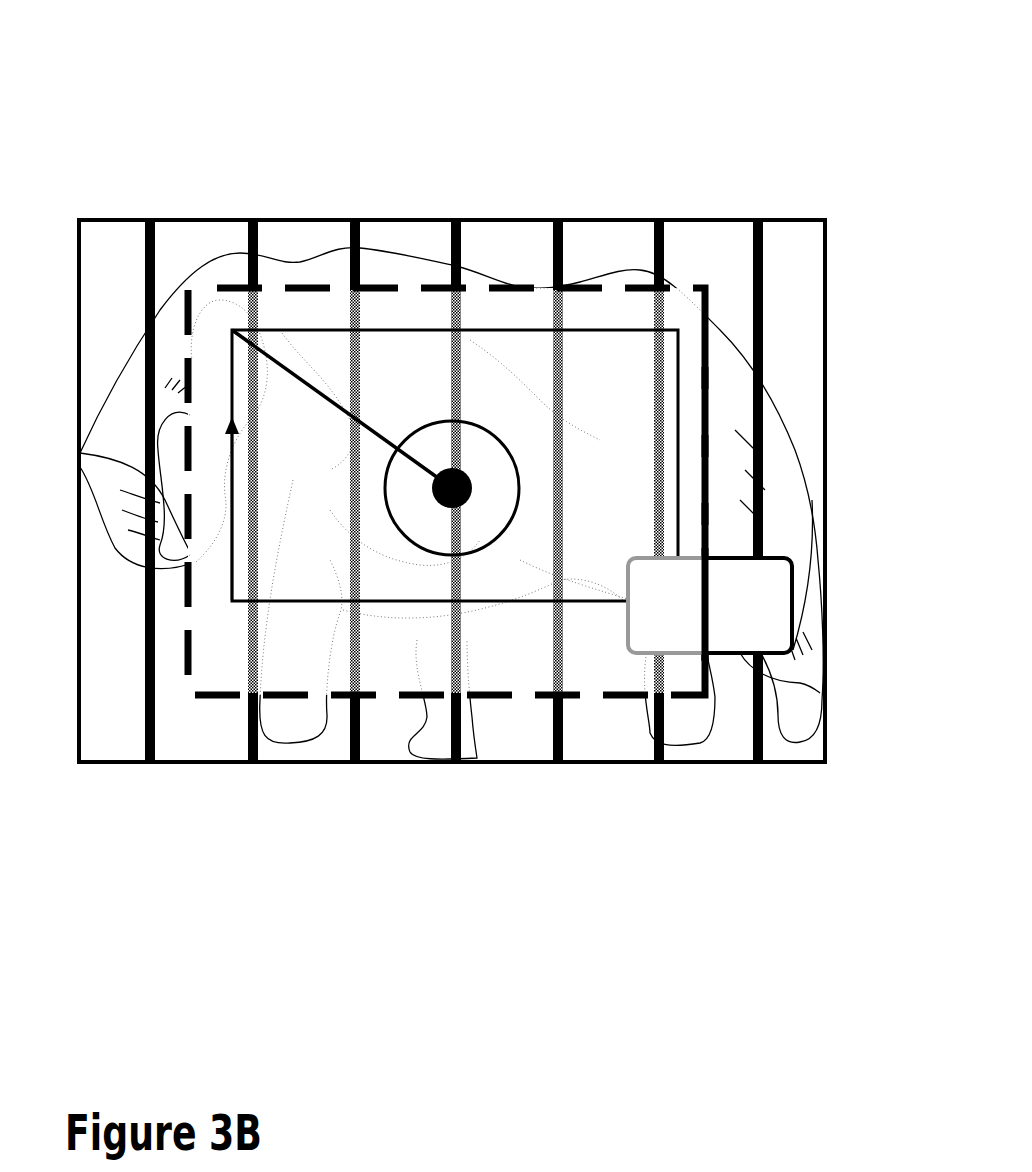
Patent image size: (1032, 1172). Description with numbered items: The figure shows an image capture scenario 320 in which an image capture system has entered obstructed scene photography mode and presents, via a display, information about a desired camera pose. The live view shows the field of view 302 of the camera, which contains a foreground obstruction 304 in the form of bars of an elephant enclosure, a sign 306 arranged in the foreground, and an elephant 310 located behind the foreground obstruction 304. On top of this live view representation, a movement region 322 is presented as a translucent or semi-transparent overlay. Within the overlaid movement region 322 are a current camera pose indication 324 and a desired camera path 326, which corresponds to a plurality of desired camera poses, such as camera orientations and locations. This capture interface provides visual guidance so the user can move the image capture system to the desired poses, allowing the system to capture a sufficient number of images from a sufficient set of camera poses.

The field of view 302 is at (387, 220).
The foreground obstruction 304 is at (562, 263).
The sign 306 is at (797, 623).
The elephant 310 is at (478, 283).
The image capture scenario 320 is at (570, 77).
The movement region 322 is at (697, 287).
The current camera pose indication 324 is at (473, 421).
The desired camera path 326 is at (328, 400).